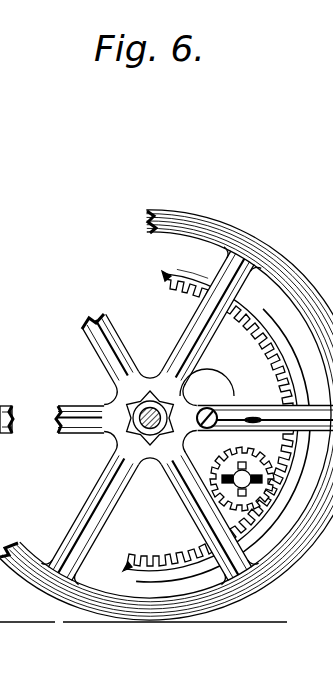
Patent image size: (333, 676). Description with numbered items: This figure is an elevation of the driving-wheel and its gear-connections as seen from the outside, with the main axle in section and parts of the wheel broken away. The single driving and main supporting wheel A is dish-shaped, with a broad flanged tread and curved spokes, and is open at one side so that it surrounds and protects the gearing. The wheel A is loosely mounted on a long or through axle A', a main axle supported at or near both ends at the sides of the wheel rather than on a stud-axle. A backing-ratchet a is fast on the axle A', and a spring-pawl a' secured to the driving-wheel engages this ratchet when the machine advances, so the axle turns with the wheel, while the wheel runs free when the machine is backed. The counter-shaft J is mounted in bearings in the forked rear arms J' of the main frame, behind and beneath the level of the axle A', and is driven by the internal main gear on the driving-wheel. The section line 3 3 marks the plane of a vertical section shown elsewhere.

The driving and main supporting wheel A is at (166, 403).
The long or through axle A' is at (166, 416).
The backing-ratchet a is at (47, 406).
The spring-pawl a' is at (220, 398).
The counter-shaft J is at (254, 479).
The forked rear arms of the main frame J' is at (230, 467).
The section line 3 is at (13, 419).